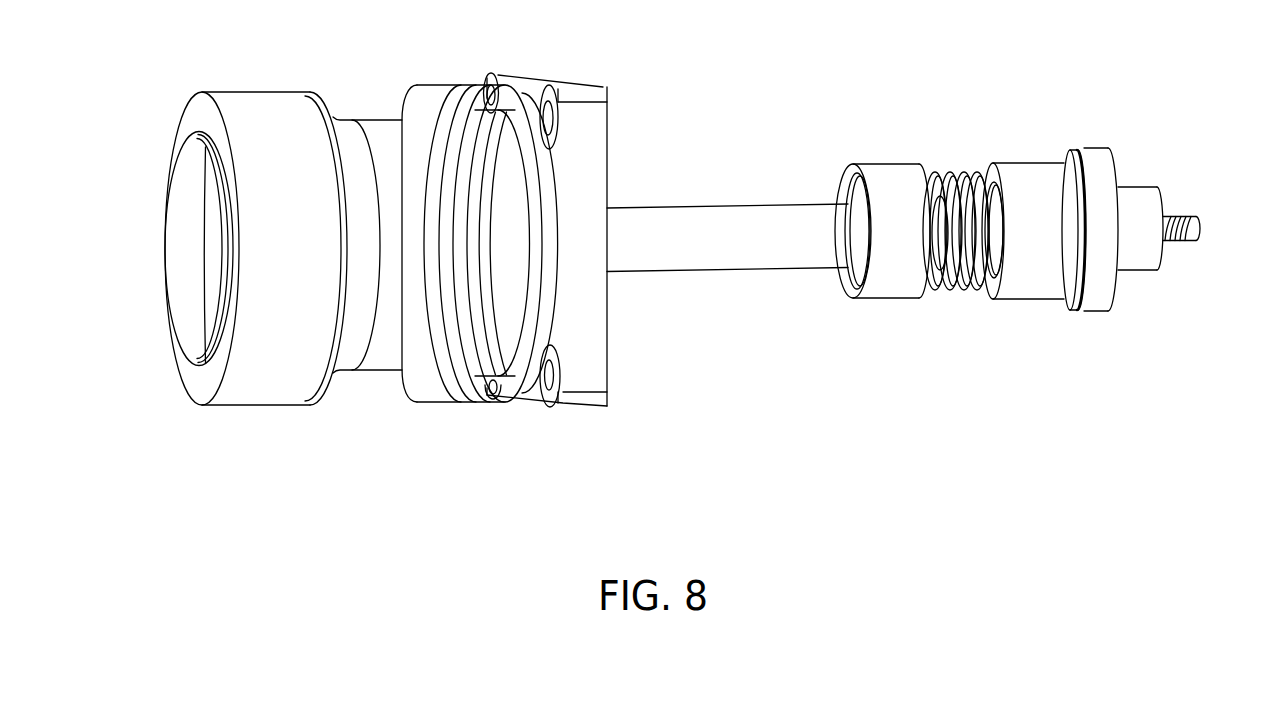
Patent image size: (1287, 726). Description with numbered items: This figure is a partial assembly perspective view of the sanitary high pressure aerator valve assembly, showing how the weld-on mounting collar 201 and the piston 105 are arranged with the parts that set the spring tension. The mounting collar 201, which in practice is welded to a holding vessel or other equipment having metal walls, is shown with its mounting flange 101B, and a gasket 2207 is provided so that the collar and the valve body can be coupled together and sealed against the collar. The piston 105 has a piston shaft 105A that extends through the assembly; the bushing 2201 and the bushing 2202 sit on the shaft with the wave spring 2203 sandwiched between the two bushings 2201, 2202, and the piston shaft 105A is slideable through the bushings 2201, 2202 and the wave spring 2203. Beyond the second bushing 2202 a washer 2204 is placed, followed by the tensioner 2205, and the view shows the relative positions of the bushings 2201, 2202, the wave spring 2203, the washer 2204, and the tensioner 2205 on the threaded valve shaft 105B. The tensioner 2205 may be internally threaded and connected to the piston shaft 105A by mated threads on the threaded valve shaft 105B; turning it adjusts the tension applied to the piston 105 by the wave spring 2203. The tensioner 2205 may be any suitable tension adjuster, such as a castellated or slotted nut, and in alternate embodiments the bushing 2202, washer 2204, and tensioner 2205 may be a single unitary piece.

The mounting collar 201 is at (256, 216).
The piston 105 is at (174, 249).
The gasket 2207 is at (457, 212).
The mounting flange 101B is at (534, 209).
The piston shaft 105A is at (727, 207).
The threaded valve shaft 105B is at (1221, 196).
The bushing 2201 is at (870, 200).
The bushing 2202 is at (1019, 268).
The wave spring 2203 is at (943, 266).
The washer 2204 is at (1043, 198).
The tensioner 2205 is at (1130, 197).